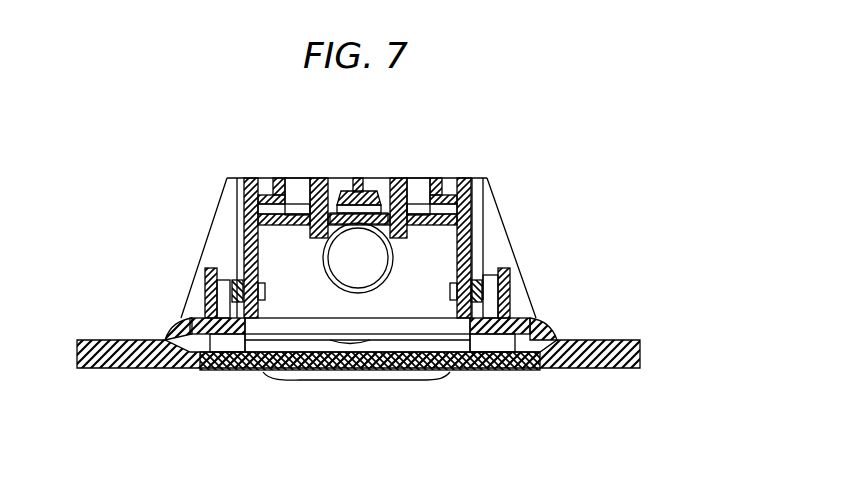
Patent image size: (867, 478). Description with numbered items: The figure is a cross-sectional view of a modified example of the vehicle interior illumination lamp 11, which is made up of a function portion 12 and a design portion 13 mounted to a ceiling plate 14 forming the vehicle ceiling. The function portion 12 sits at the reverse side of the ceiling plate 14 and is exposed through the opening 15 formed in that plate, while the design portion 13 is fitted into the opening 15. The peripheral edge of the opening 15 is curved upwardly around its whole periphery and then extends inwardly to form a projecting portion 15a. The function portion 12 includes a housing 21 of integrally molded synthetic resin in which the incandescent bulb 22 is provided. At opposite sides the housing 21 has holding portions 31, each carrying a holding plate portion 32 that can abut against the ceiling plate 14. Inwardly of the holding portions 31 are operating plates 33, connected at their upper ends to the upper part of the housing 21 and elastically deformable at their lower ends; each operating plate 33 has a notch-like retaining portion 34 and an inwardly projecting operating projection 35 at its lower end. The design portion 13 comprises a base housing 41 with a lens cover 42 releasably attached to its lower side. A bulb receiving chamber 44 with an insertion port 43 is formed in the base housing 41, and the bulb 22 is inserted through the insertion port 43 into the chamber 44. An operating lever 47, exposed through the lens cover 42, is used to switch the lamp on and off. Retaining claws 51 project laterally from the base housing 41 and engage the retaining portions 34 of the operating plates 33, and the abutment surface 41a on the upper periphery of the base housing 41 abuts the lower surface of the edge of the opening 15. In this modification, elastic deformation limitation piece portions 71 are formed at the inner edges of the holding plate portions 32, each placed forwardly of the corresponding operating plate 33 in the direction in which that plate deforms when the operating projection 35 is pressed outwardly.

The vehicle interior illumination lamp 11 is at (580, 180).
The function portion 12 is at (486, 170).
The design portion 13 is at (205, 393).
The ceiling plate 14 is at (645, 350).
The opening 15 is at (480, 338).
The projecting portion 15a is at (532, 320).
The housing 21 is at (258, 176).
The incandescent bulb 22 is at (322, 268).
The holding portion 31 is at (198, 270).
The holding plate portion 32 is at (488, 318).
The operating plate 33 is at (230, 236).
The retaining portion 34 is at (473, 247).
The operating projection 35 is at (270, 283).
The base housing 41 is at (240, 212).
The abutment surface 41a is at (508, 335).
The lens cover 42 is at (252, 368).
The insertion port 43 is at (325, 197).
The bulb receiving chamber 44 is at (336, 310).
The operating lever 47 is at (430, 382).
The retaining claw 51 is at (478, 288).
The elastic deformation limitation piece portion 71 is at (207, 287).